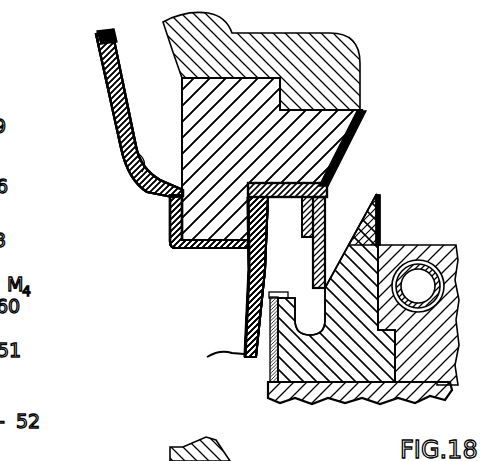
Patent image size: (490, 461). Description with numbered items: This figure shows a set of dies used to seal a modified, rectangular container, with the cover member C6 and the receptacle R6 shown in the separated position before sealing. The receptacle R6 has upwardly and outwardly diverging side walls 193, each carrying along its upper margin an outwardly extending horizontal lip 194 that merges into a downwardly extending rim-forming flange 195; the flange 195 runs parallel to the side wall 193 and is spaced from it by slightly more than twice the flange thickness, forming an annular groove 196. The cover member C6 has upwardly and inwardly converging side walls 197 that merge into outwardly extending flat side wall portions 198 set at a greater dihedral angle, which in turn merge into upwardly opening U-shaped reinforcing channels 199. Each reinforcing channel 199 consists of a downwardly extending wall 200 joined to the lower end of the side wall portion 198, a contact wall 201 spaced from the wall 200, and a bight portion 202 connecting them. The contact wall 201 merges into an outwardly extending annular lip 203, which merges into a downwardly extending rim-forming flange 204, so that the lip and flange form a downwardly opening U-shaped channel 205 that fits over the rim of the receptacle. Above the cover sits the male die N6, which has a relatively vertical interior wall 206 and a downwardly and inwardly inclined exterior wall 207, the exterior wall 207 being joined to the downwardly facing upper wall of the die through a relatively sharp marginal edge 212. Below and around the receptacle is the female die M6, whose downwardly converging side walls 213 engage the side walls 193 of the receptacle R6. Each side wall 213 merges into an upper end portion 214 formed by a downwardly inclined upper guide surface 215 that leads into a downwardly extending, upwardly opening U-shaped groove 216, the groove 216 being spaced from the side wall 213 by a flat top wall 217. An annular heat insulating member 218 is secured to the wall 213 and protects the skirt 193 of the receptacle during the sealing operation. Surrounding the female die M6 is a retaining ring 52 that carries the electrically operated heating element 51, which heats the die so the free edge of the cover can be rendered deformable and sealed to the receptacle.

The heating element 51 is at (427, 287).
The retaining ring 52 is at (413, 310).
The side wall 193 is at (245, 320).
The horizontal lip 194 is at (380, 202).
The rim-forming flange 195 is at (275, 258).
The annular groove 196 is at (295, 215).
The side wall 197 is at (105, 62).
The side wall portion 198 is at (125, 148).
The reinforcing channel 199 is at (170, 226).
The downwardly extending wall 200 is at (172, 210).
The contact wall 201 is at (170, 197).
The bight portion 202 is at (172, 251).
The annular lip 203 is at (322, 165).
The rim-forming flange 204 is at (380, 233).
The U-shaped channel 205 is at (333, 194).
The interior wall 206 is at (182, 100).
The exterior wall 207 is at (305, 165).
The marginal edge 212 is at (327, 188).
The side wall 213 is at (270, 360).
The upper end portion 214 is at (380, 218).
The upper guide surface 215 is at (250, 296).
The U-shaped groove 216 is at (305, 332).
The flat top wall 217 is at (200, 317).
The heat insulating member 218 is at (272, 378).
The cover member C6 is at (92, 46).
The male die N6 is at (176, 168).
The receptacle R6 is at (238, 339).
The female die M6 is at (353, 370).